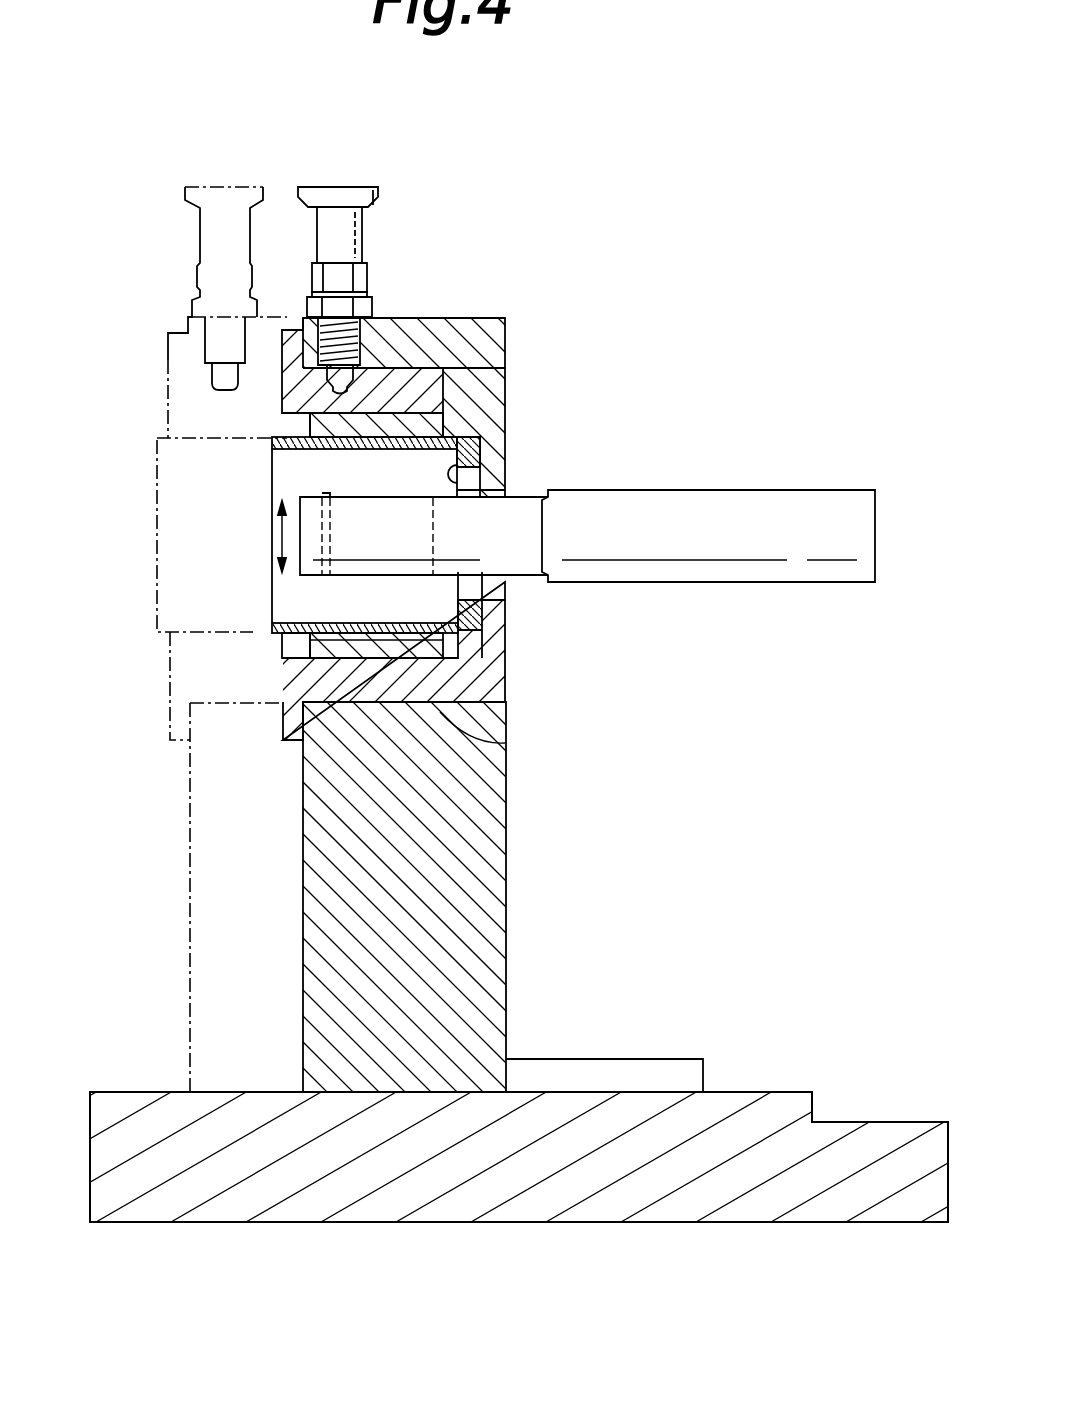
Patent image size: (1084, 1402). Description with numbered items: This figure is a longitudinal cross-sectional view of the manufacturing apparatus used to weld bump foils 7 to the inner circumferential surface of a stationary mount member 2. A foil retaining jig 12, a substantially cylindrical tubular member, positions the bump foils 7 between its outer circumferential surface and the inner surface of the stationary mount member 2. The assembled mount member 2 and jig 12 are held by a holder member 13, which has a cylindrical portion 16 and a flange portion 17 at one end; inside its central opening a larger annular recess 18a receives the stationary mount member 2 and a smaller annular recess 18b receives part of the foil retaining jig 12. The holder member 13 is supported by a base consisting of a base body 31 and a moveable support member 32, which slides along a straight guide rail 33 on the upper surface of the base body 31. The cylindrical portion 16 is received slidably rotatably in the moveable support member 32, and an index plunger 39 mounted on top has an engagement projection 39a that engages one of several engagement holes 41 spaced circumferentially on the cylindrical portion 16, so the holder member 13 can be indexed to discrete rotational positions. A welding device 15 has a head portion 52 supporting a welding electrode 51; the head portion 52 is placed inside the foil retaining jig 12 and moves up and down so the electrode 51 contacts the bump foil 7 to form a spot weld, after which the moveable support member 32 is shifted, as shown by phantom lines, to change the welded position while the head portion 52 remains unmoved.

The stationary mount member 2 is at (407, 412).
The bump foil 7 is at (285, 437).
The foil retaining jig 12 is at (483, 612).
The holder member 13 is at (472, 362).
The welding device 15 is at (722, 490).
The cylindrical portion 16 is at (505, 745).
The flange portion 17 is at (285, 718).
The larger annular recess 18a is at (503, 440).
The smaller annular recess 18b is at (505, 478).
The base body 31 is at (587, 1210).
The moveable support member 32 is at (475, 935).
The guide rail 33 is at (793, 1105).
The index plunger 39 is at (331, 186).
The engagement projection 39a is at (373, 370).
The engagement hole 41 is at (283, 404).
The welding electrode 51 is at (272, 612).
The head portion 52 is at (363, 512).